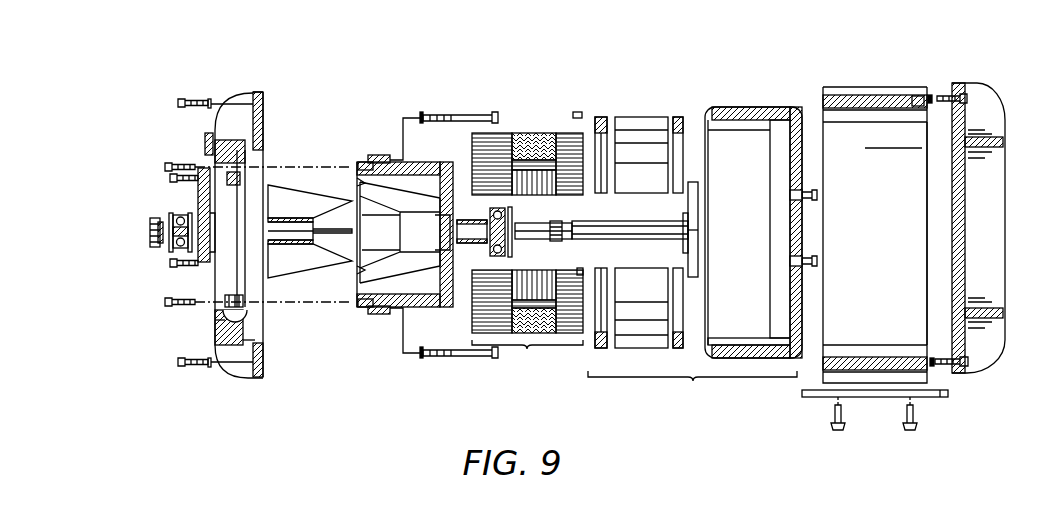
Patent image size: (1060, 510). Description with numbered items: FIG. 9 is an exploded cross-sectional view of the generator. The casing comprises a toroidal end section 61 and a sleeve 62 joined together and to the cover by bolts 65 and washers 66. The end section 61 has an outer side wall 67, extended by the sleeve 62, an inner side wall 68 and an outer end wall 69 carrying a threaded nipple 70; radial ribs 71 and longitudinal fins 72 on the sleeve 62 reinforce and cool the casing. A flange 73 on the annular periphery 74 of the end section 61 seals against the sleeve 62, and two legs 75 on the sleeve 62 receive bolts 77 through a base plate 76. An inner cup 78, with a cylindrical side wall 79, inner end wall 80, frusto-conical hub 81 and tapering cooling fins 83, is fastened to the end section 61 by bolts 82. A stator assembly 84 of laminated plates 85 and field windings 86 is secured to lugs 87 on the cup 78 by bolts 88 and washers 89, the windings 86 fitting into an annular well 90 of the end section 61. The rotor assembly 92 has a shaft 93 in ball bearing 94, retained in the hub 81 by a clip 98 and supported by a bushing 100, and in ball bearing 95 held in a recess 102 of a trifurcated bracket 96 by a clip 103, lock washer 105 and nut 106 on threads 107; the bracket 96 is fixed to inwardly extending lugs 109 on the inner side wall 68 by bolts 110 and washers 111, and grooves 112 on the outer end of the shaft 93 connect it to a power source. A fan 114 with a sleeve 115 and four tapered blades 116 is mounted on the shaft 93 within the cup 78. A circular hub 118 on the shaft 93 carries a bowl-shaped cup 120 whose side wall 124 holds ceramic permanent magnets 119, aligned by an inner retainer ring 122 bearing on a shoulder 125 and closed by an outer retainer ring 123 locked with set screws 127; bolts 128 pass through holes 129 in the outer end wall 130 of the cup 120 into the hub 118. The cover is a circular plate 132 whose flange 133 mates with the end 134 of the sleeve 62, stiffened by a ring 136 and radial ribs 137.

The end section 61 is at (250, 92).
The sleeve 62 is at (882, 93).
The bolts 65 is at (183, 100).
The washers 66 is at (210, 99).
The outer side wall 67 is at (255, 340).
The inner side wall 68 is at (255, 318).
The outer end wall 69 is at (216, 326).
The nipple 70 is at (205, 140).
The ribs 71 is at (240, 97).
The fins 72 is at (863, 90).
The flange 73 is at (266, 355).
The periphery 74 is at (262, 95).
The legs 75 is at (800, 392).
The base plate 76 is at (938, 398).
The bolts 77 is at (905, 417).
The inner cup 78 is at (445, 163).
The cylindrical side wall 79 is at (405, 297).
The inner end wall 80 is at (453, 297).
The central hub 81 is at (432, 205).
The bolts 82 is at (166, 167).
The cooling fins 83 is at (365, 178).
The stator assembly 84 is at (528, 349).
The laminated plates 85 is at (543, 132).
The field windings 86 is at (503, 135).
The lugs 87 is at (372, 155).
The bolts 88 is at (480, 113).
The washers 89 is at (422, 112).
The annular well 90 is at (240, 172).
The rotor assembly 92 is at (695, 385).
The shaft 93 is at (638, 228).
The ball bearing 94 is at (492, 212).
The ball bearing 95 is at (185, 215).
The bracket 96 is at (200, 205).
The clip 98 is at (512, 208).
The bushing 100 is at (466, 230).
The recess 102 is at (188, 252).
The clip 103 is at (170, 250).
The lock washer 105 is at (152, 222).
The nut 106 is at (158, 236).
The threads 107 is at (553, 223).
The lugs 109 is at (245, 150).
The bolts 110 is at (172, 178).
The washers 111 is at (187, 213).
The grooves 112 is at (532, 232).
The fan 114 is at (318, 282).
The sleeve 115 is at (282, 218).
The blades 116 is at (280, 188).
The hub 118 is at (698, 228).
The permanent magnets 119 is at (643, 117).
The cup 120 is at (755, 107).
The inner retainer ring 122 is at (682, 117).
The outer retainer ring 123 is at (601, 117).
The side wall 124 is at (740, 348).
The shoulder 125 is at (770, 152).
The set screws 127 is at (577, 110).
The bolts 128 is at (808, 262).
The holes 129 is at (792, 194).
The outer end wall 130 is at (802, 302).
The circular plate 132 is at (963, 253).
The flange 133 is at (952, 102).
The end 134 is at (925, 253).
The ring 136 is at (1003, 148).
The ribs 137 is at (1000, 115).